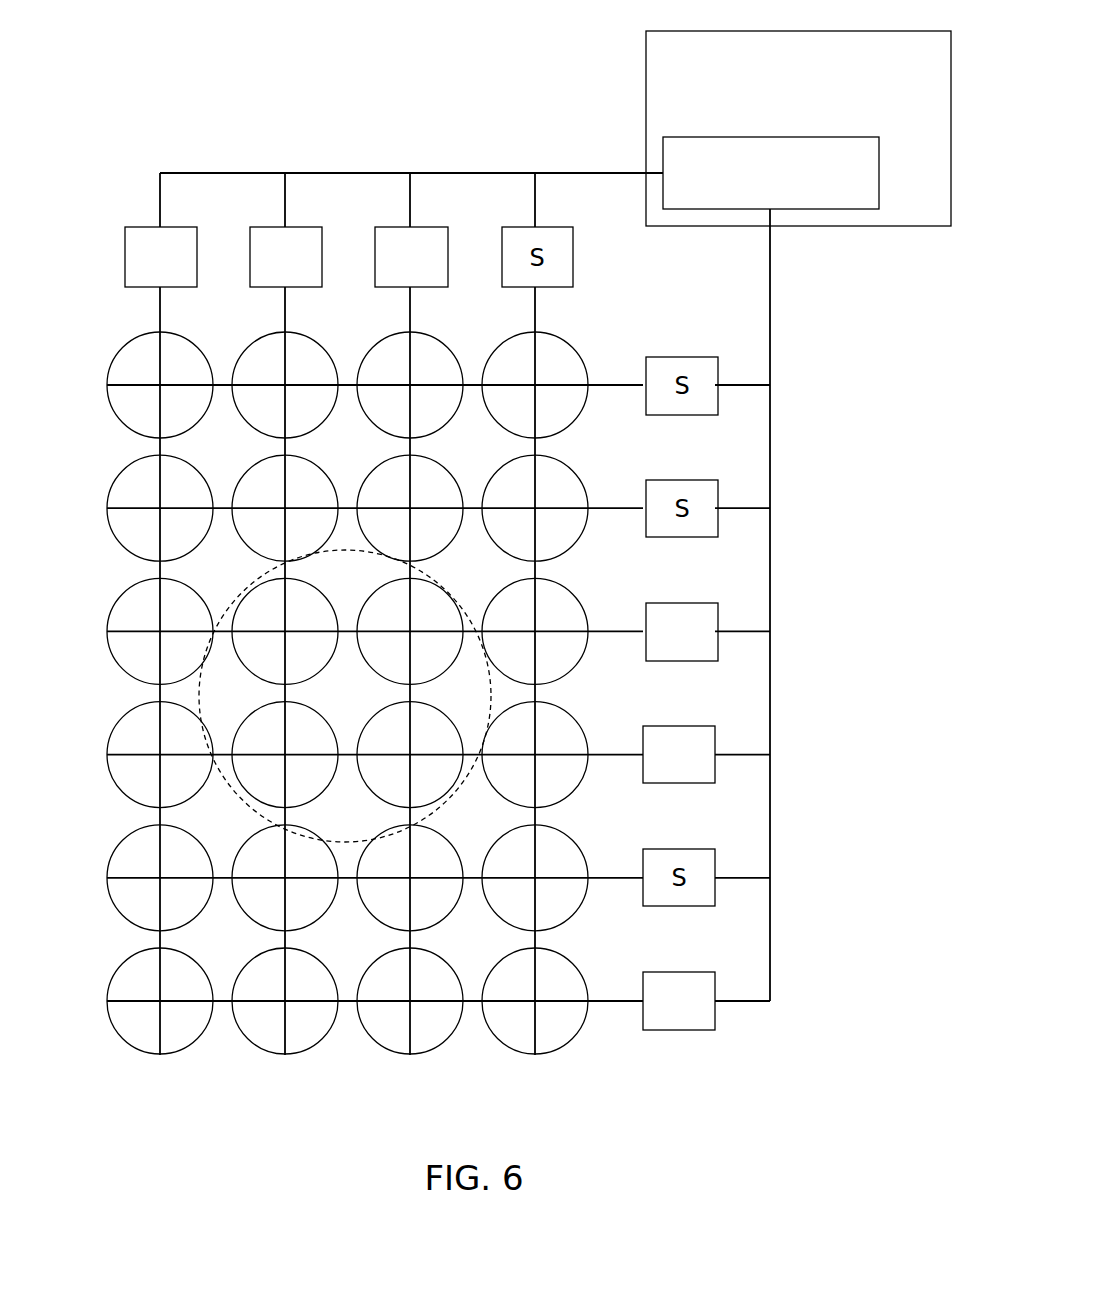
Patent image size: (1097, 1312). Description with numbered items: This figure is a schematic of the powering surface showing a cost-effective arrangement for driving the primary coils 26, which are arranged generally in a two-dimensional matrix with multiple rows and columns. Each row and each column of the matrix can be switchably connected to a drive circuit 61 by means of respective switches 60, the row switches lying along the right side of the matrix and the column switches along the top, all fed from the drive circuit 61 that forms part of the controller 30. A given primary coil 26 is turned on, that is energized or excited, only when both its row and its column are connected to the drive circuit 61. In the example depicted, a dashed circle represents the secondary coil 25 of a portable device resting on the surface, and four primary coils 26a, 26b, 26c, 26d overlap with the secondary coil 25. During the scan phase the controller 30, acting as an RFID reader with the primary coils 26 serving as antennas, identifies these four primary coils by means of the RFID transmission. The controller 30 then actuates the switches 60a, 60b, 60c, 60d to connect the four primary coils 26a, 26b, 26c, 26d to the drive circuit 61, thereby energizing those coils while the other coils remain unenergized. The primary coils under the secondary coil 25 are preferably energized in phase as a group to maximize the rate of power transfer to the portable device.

The secondary coil 25 is at (437, 812).
The primary coils 26 is at (120, 967).
The primary coil 26a is at (260, 585).
The primary coil 26b is at (265, 703).
The primary coil 26c is at (428, 705).
The primary coil 26d is at (453, 595).
The controller 30 is at (646, 130).
The switches 60 is at (143, 225).
The switch 60a is at (718, 605).
The switch 60b is at (715, 728).
The switch 60c is at (305, 225).
The switch 60d is at (428, 225).
The drive circuit 61 is at (867, 209).